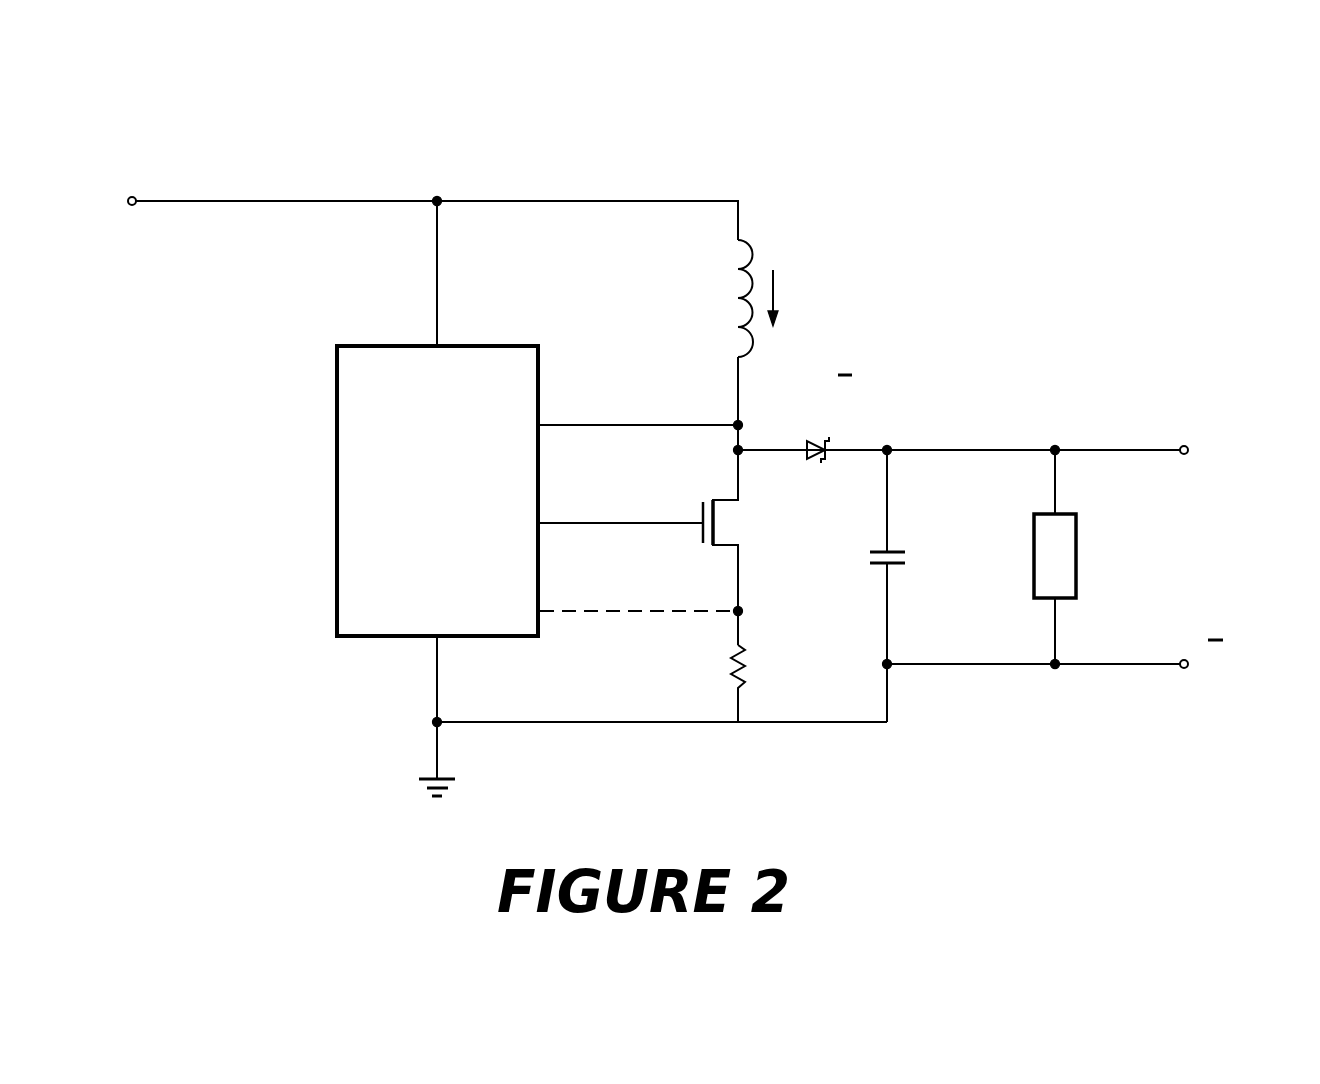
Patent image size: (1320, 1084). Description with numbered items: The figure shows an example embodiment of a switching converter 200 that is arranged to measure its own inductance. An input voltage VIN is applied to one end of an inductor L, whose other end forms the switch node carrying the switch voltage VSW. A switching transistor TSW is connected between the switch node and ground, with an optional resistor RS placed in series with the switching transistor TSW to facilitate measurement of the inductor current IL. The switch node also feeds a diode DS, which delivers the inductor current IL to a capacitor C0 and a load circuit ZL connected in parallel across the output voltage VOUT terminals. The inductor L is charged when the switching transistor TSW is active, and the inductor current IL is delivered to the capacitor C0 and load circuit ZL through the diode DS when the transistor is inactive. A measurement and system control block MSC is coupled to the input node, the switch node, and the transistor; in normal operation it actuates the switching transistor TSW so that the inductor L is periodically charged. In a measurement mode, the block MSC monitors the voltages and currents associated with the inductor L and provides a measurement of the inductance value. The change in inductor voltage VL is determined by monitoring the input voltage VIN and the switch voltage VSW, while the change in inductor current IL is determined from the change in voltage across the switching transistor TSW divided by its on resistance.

The switching converter 200 is at (1226, 146).
The input voltage VIN is at (402, 214).
The measurement and system control block MSC is at (437, 491).
The inductor L is at (729, 298).
The inductor current IL is at (788, 298).
The inductor voltage VL is at (886, 294).
The switch voltage VSW is at (641, 401).
The diode DS is at (811, 431).
The switching transistor TSW is at (667, 547).
The resistor RS is at (755, 683).
The capacitor C0 is at (908, 584).
The load circuit ZL is at (1075, 557).
The output voltage VOUT is at (1101, 557).